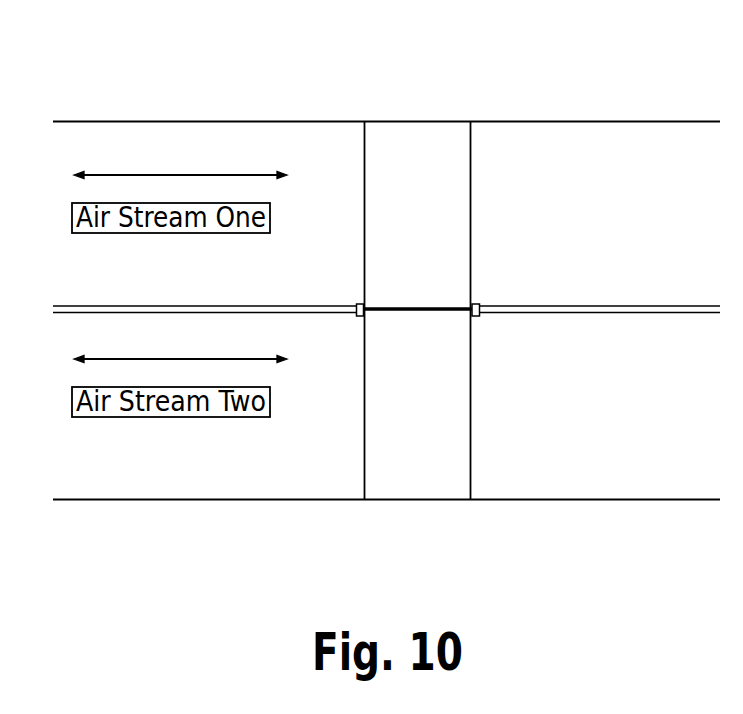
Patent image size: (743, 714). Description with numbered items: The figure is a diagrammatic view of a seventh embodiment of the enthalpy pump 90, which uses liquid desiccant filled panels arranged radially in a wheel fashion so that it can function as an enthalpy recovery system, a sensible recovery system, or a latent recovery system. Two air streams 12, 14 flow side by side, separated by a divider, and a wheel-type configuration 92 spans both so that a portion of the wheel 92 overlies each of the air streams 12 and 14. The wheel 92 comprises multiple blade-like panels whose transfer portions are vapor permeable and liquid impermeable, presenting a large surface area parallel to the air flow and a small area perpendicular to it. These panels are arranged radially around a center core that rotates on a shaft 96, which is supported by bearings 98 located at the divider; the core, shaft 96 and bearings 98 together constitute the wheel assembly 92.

The enthalpy pump 90 is at (420, 43).
The air stream 12 is at (137, 122).
The air stream 14 is at (263, 500).
The wheel-type configuration 92 is at (418, 311).
The shaft 96 is at (440, 305).
The bearings 98 is at (360, 317).